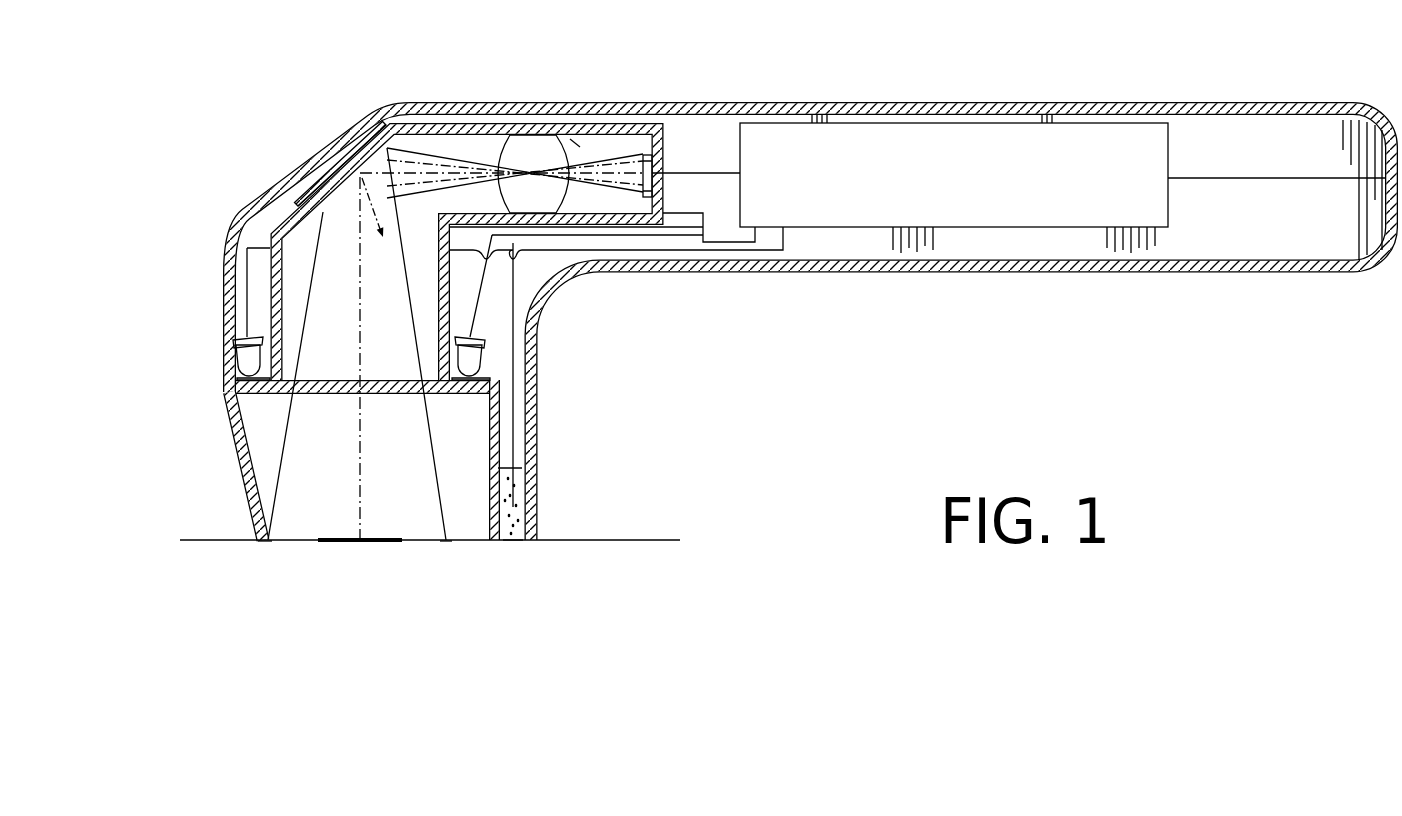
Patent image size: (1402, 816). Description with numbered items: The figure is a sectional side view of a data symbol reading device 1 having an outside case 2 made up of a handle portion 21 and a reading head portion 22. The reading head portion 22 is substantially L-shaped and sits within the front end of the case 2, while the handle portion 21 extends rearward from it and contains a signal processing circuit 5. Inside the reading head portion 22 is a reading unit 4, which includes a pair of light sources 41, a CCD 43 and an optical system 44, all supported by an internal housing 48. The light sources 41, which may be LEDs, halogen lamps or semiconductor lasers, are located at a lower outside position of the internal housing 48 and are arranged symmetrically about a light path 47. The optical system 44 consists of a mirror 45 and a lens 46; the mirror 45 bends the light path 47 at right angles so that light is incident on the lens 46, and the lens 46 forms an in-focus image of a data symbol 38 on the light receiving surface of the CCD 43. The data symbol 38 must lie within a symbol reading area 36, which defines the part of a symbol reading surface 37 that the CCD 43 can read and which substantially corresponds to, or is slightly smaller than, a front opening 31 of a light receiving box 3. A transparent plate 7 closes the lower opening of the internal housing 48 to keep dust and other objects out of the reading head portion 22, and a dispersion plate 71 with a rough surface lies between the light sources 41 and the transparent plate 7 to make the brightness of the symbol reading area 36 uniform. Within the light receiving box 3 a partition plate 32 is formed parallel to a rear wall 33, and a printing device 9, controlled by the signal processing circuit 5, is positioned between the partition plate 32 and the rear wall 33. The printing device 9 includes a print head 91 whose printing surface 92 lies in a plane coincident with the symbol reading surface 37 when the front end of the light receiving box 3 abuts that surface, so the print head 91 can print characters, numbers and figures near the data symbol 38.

The data symbol reading device 1 is at (777, 312).
The outside case 2 is at (790, 283).
The handle portion 21 is at (1100, 296).
The reading head portion 22 is at (353, 97).
The light receiving box 3 is at (238, 482).
The front opening 31 is at (286, 546).
The partition plate 32 is at (501, 412).
The rear wall 33 is at (538, 470).
The symbol reading area 36 is at (433, 545).
The symbol reading surface 37 is at (660, 538).
The data symbol 38 is at (346, 545).
The reading unit 4 is at (340, 160).
The light sources 41 is at (237, 352).
The CCD 43 is at (660, 123).
The optical system 44 is at (580, 135).
The mirror 45 is at (305, 201).
The lens 46 is at (527, 134).
The light path 47 is at (362, 472).
The internal housing 48 is at (447, 121).
The signal processing circuit 5 is at (952, 142).
The transparent plate 7 is at (335, 395).
The dispersion plate 71 is at (235, 379).
The printing device 9 is at (503, 556).
The print head 91 is at (517, 514).
The printing surface 92 is at (518, 546).